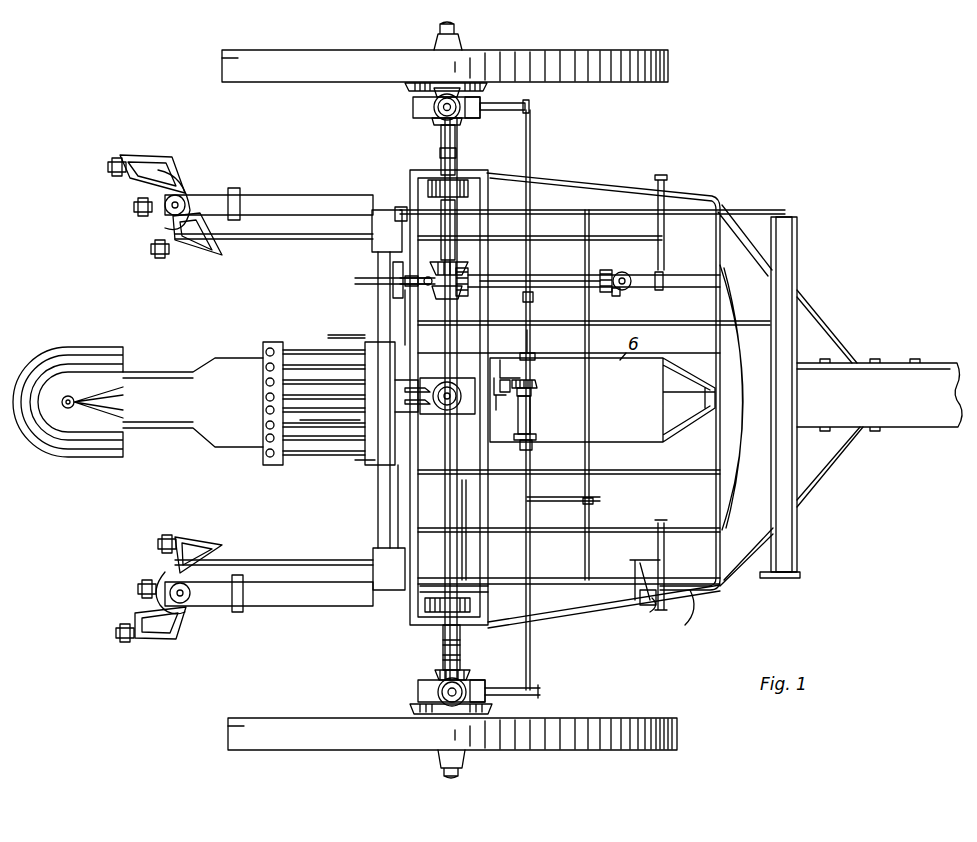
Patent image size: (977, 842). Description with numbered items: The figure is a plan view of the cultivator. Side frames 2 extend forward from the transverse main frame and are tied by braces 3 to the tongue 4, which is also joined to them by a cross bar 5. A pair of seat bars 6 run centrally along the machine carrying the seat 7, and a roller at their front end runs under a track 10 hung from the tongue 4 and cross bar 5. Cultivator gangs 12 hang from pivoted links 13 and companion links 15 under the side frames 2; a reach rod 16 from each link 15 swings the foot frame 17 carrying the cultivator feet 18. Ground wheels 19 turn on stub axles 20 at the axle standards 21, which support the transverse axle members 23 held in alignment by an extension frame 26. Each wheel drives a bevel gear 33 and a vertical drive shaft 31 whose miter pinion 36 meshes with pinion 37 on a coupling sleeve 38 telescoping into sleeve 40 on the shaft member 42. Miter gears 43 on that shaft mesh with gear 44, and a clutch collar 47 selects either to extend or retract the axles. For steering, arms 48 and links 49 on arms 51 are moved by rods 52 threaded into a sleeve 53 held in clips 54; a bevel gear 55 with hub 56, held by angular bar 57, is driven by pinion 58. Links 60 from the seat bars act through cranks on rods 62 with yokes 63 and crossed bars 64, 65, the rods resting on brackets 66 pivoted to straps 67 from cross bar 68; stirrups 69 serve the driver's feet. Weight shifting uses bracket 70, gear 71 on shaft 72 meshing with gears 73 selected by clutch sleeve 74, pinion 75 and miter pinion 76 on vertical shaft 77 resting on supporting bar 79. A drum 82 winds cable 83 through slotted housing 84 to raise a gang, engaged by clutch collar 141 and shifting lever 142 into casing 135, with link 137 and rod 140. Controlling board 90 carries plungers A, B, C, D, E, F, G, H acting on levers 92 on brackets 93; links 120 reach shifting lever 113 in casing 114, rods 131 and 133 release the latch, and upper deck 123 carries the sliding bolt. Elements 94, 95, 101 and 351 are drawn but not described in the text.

The side frame 2 is at (712, 197).
The brace 3 is at (826, 322).
The tongue 4 is at (945, 428).
The cross bar 5 is at (718, 288).
The seat bar 6 is at (205, 440).
The seat 7 is at (72, 460).
The track 10 is at (742, 487).
The cultivator gang 12 is at (300, 195).
The pivoted link 13 is at (683, 617).
The companion link 15 is at (662, 520).
The reach rod 16 is at (298, 560).
The cultivator foot frame 17 is at (208, 518).
The cultivator foot 18 is at (124, 642).
The ground wheel 19 is at (222, 66).
The stub axle 20 is at (438, 30).
The axle standard 21 is at (413, 111).
The axle member 23 is at (458, 530).
The extension frame 26 is at (378, 500).
The vertical drive shaft 31 is at (430, 118).
The bevel gear 33 is at (405, 87).
The miter pinion 36 is at (466, 120).
The miter pinion 37 is at (456, 130).
The coupling sleeve 38 is at (462, 652).
The coupling sleeve 40 is at (440, 652).
The shaft member 42 is at (458, 232).
The miter gear 43 is at (334, 437).
The miter gear 44 is at (419, 403).
The clutch collar 47 is at (334, 422).
The arm 48 is at (505, 103).
The link 49 is at (531, 152).
The arm 51 is at (523, 300).
The rod 52 is at (535, 344).
The sleeve 53 is at (532, 412).
The clip 54 is at (538, 436).
The bevel gear 55 is at (540, 383).
The hub 56 is at (534, 393).
The angular bar 57 is at (507, 356).
The bevel pinion 58 is at (501, 405).
The link 60 is at (590, 502).
The vertical rod 62 is at (625, 578).
The yoke 63 is at (638, 606).
The crossed bar 64 is at (660, 568).
The crossed bar 65 is at (656, 614).
The bracket 66 is at (570, 605).
The strap 67 is at (800, 575).
The cross bar 68 is at (797, 547).
The stirrup 69 is at (236, 612).
The angular bracket 70 is at (540, 275).
The bevel gear 71 is at (470, 266).
The shaft 72 is at (552, 290).
The bevel gear 73 is at (444, 255).
The clutch sleeve 74 is at (348, 335).
The bevel pinion 75 is at (620, 268).
The miter pinion 76 is at (630, 289).
The vertical shaft 77 is at (616, 296).
The supporting bar 79 is at (663, 290).
The drum 82 is at (458, 190).
The steel cable 83 is at (430, 615).
The slotted housing 84 is at (395, 200).
The controlling board 90 is at (272, 342).
The lever 92 is at (310, 365).
The bracket 93 is at (290, 350).
The rod 94 is at (334, 373).
The gear 95 is at (334, 406).
The rod 101 is at (320, 450).
The shifting lever 113 is at (430, 285).
The casing 114 is at (393, 270).
The link 120 is at (325, 460).
The upper deck 123 is at (372, 470).
The rod 131 is at (345, 470).
The rod 133 is at (391, 540).
The casing 135 is at (372, 222).
The link 137 is at (405, 300).
The rod 140 is at (373, 552).
The clutch collar 141 is at (488, 590).
The shifting lever 142 is at (466, 560).
The bearing 351 is at (430, 148).
The plunger A is at (265, 350).
The plunger B is at (265, 365).
The plunger C is at (265, 381).
The plunger D is at (265, 396).
The plunger E is at (265, 410).
The plunger F is at (265, 425).
The plunger G is at (265, 440).
The plunger H is at (265, 456).